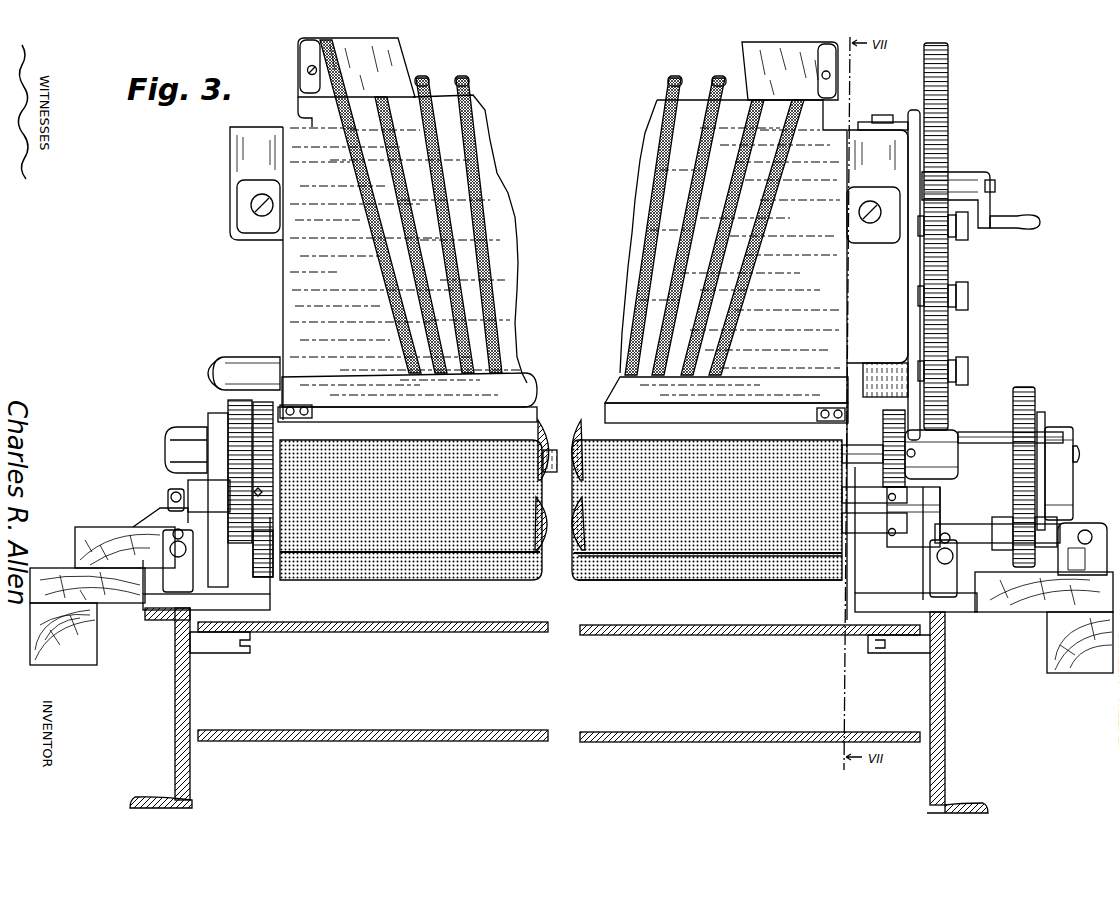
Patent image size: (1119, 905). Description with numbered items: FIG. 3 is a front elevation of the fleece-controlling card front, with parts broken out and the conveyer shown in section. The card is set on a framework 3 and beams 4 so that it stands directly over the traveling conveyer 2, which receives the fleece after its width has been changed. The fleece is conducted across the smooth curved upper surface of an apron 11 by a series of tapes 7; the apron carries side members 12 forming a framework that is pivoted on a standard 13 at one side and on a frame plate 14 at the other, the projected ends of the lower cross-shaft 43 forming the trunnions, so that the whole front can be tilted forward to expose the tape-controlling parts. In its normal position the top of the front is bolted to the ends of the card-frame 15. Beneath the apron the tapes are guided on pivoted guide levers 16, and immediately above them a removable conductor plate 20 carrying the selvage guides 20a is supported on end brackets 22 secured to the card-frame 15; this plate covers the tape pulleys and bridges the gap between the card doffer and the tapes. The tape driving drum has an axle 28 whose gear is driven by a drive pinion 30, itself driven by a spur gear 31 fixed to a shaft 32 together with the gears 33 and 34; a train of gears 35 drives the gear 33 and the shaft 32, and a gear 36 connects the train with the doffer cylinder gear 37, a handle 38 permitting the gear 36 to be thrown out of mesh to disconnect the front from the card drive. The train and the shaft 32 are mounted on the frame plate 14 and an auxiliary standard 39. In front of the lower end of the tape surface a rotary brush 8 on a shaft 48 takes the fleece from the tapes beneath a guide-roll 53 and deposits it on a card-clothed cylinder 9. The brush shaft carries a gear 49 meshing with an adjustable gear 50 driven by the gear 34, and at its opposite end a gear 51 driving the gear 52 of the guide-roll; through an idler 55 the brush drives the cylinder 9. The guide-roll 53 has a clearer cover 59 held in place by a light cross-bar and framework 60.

The traveling conveyer 2 is at (559, 682).
The framework 3 is at (1044, 622).
The beams 4 is at (559, 710).
The tapes 7 is at (562, 207).
The rotary brush 8 is at (710, 587).
The card-clothed cylinder 9 is at (561, 510).
The apron 11 is at (544, 357).
The side members 12 is at (539, 211).
The standard 13 is at (244, 362).
The frame plate 14 is at (884, 262).
The card-frame 15 is at (256, 169).
The guide levers 16 is at (570, 73).
The conductor plate 20 is at (369, 82).
The selvage guides 20a is at (518, 58).
The end brackets 22 is at (807, 71).
The axle 28 is at (815, 427).
The drive pinion 30 is at (900, 528).
The spur gear 31 is at (889, 445).
The shaft 32 is at (1010, 423).
The gear 33 is at (953, 431).
The gear 34 is at (1036, 466).
The train of gears 35 is at (960, 298).
The gear 36 is at (959, 185).
The doffer cylinder gear 37 is at (956, 236).
The handle 38 is at (1015, 212).
The auxiliary standard 39 is at (1070, 471).
The cross-shaft 43 is at (192, 373).
The brush shaft 48 is at (997, 524).
The gear 49 is at (1072, 534).
The adjustable gear 50 is at (1088, 442).
The gear 51 is at (248, 553).
The gear 52 is at (264, 454).
The guide-roll 53 is at (560, 466).
The idler 55 is at (212, 470).
The clearer cover 59 is at (565, 390).
The cross-bar and framework 60 is at (560, 518).